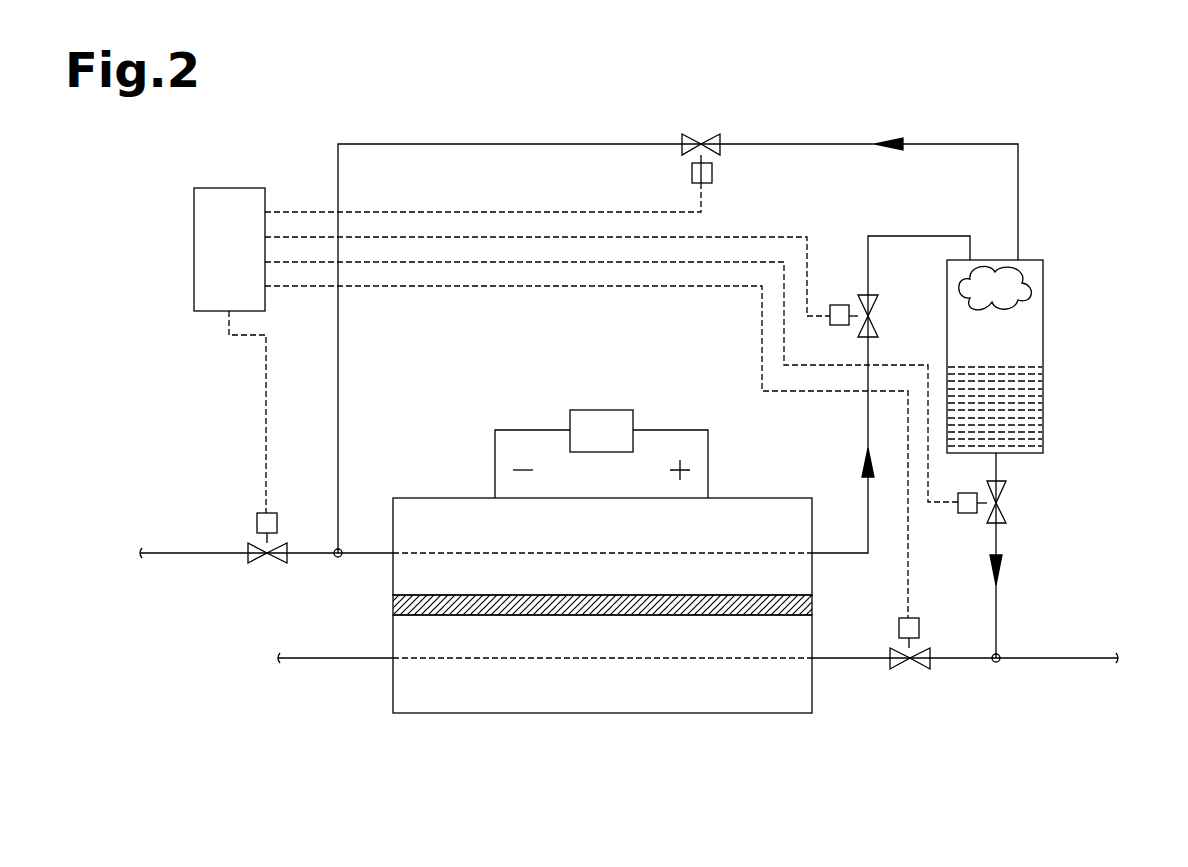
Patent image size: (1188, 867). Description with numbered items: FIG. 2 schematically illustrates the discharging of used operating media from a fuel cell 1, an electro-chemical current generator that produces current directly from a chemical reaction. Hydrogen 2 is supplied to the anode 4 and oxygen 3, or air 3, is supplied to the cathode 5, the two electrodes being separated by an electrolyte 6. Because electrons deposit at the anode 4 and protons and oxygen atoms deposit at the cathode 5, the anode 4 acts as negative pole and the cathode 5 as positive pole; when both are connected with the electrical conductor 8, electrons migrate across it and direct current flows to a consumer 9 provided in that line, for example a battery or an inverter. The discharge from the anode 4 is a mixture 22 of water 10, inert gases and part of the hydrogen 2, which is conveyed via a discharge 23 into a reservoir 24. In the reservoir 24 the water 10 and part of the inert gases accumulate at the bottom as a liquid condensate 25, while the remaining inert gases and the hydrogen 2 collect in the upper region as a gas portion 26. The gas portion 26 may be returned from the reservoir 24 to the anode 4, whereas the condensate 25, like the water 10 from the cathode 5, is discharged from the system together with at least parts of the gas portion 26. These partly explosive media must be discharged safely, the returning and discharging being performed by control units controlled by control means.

The fuel cell 1 is at (538, 606).
The hydrogen 2 is at (157, 533).
The oxygen 3 is at (293, 639).
The anode 4 is at (452, 520).
The cathode 5 is at (510, 690).
The electrolyte 6 is at (675, 605).
The electrical conductor 8 is at (670, 429).
The consumer 9 is at (602, 430).
The water 10 is at (1101, 676).
The mixture 22 is at (863, 458).
The discharge 23 is at (905, 235).
The reservoir 24 is at (1080, 318).
The liquid condensate 25 is at (1005, 412).
The gas portion 26 is at (893, 137).